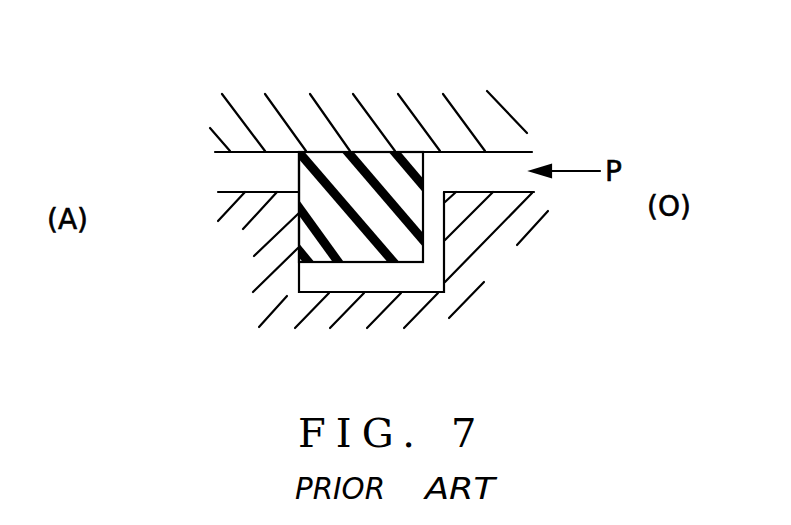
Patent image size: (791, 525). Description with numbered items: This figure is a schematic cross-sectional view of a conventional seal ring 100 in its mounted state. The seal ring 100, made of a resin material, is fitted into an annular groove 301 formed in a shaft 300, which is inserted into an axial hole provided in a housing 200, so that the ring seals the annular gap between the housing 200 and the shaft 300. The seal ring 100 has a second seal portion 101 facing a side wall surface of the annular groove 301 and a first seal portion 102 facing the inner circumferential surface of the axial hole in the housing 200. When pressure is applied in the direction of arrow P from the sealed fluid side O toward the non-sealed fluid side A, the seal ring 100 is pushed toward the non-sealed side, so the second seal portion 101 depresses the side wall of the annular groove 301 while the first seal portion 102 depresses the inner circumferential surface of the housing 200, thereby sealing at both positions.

The seal ring 100 is at (379, 184).
The second seal portion 101 is at (298, 222).
The first seal portion 102 is at (356, 152).
The housing 200 is at (245, 157).
The shaft 300 is at (253, 192).
The annular groove 301 is at (376, 277).